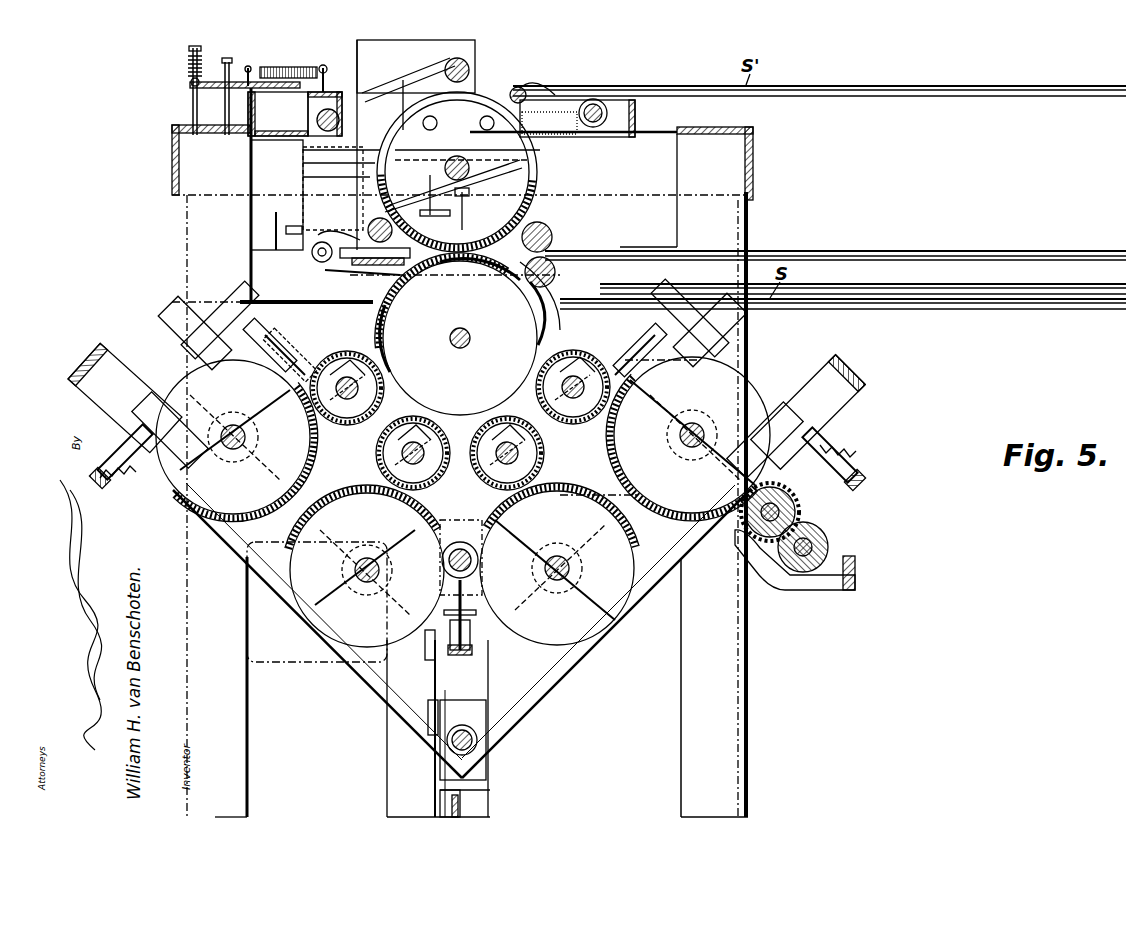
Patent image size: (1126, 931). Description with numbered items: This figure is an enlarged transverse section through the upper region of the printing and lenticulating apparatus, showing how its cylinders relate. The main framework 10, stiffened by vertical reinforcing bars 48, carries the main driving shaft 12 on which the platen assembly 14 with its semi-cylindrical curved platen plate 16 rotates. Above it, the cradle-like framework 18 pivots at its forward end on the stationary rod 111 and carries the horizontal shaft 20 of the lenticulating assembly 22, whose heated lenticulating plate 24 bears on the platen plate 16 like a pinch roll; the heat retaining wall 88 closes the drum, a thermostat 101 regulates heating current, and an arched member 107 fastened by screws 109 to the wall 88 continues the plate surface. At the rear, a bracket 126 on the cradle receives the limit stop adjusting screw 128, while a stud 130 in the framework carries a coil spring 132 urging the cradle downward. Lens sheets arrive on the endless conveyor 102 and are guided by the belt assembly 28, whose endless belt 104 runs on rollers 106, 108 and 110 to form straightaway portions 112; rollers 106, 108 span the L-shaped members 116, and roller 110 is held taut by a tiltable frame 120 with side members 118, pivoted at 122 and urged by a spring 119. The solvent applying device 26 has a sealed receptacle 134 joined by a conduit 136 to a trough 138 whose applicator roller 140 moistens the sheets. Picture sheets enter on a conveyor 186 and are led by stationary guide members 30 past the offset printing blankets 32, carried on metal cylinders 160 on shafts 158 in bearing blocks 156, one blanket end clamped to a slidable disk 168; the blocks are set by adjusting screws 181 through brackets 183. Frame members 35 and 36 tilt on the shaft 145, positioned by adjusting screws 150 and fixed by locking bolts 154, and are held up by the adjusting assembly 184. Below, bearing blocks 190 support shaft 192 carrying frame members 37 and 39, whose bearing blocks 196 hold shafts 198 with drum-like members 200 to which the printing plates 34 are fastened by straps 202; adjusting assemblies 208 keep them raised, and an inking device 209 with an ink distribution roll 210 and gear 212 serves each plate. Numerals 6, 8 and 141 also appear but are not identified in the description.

The framework 10 is at (170, 172).
The cradle-like framework 18 is at (640, 128).
The spring 119 is at (287, 67).
The stud 130 is at (191, 52).
The coil spring 132 is at (188, 66).
The bracket 126 is at (190, 82).
The limit stop adjusting screw 128 is at (228, 60).
The tiltable frame 120 is at (278, 114).
The roller 110 is at (305, 114).
The L-shaped members 116 is at (357, 45).
The endless belt 104 is at (375, 75).
The roller 106 is at (470, 66).
The endless conveyor 102 is at (532, 83).
The stationary rod 111 is at (608, 113).
The side members 118 is at (320, 152).
The belt straightaway portions 112 is at (319, 165).
The endless belt assembly 28 is at (318, 178).
The solvent storage receptacle 134 is at (330, 205).
The roller 108 is at (357, 230).
The conduit 136 is at (315, 255).
The pivot 122 is at (316, 258).
The solvent applying device 26 is at (349, 284).
The slidable disk 168 is at (370, 273).
The horizontal rotatable shaft 20 is at (470, 185).
The heat retaining wall 88 is at (433, 172).
The thermostat 101 is at (418, 195).
The lenticulating assembly 22 is at (462, 222).
The arched member 107 is at (540, 150).
The screws 109 is at (535, 160).
The lenticulating plate 24 is at (541, 245).
The conveyor 186 is at (1040, 309).
The main driving shaft 12 is at (455, 334).
The platen assembly 14 is at (428, 340).
The solvent trough 138 is at (480, 269).
The applicator roller 140 is at (460, 274).
The curved platen plate 16 is at (505, 284).
The stationary guiding devices 30 is at (460, 404).
The offset printing blankets 32 is at (460, 404).
The bearing blocks 156 is at (460, 406).
The offset blanket supporting shaft 158 is at (462, 422).
The metal cylinder 160 is at (460, 400).
The curved printing plates 34 is at (463, 502).
The bearing blocks 196 is at (462, 502).
The printing plate-supporting shafts 198 is at (462, 502).
The drum-like members 200 is at (467, 500).
The straps 202 is at (465, 505).
The adjusting assembly 184 is at (170, 324).
The frame member 36 is at (270, 340).
The brackets 183 is at (465, 342).
The adjusting screws 181 is at (460, 345).
The frame member 35 is at (662, 356).
The frame member 39 is at (85, 390).
The frame member 37 is at (850, 375).
The adjusting assemblies 208 is at (110, 430).
The ink distribution roll 210 is at (795, 505).
The gear 212 is at (810, 530).
The inking device 209 is at (815, 588).
The shaft 145 is at (478, 559).
The bearing 141 is at (482, 558).
The rod 6 is at (470, 615).
The adjusting screws 150 is at (462, 808).
The locking bolts 154 is at (430, 748).
The shaft 192 is at (480, 742).
The bearing blocks 190 is at (487, 770).
The vertical reinforcing bars 48 is at (400, 770).
The axis 8 is at (600, 509).